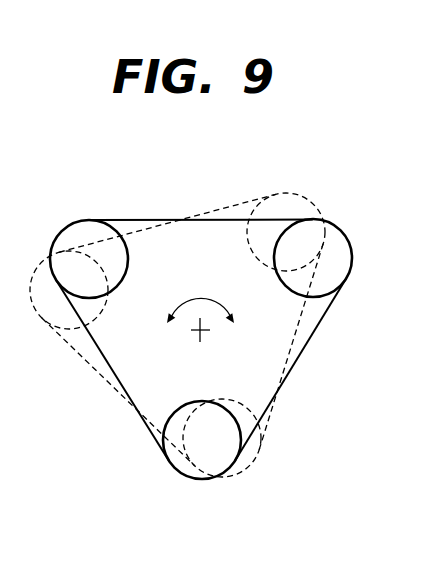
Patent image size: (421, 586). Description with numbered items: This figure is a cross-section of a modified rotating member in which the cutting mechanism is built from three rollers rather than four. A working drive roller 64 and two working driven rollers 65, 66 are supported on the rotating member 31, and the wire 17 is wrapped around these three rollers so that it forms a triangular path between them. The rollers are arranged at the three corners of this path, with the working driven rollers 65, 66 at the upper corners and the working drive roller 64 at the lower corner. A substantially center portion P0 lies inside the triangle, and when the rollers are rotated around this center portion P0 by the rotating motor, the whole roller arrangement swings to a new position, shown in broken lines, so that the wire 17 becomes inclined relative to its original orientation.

The rotating member 31 is at (192, 237).
The wire 17 is at (308, 332).
The working drive roller 64 is at (183, 463).
The working driven roller 65 is at (97, 230).
The working driven roller 66 is at (333, 238).
The center portion P0 is at (204, 332).